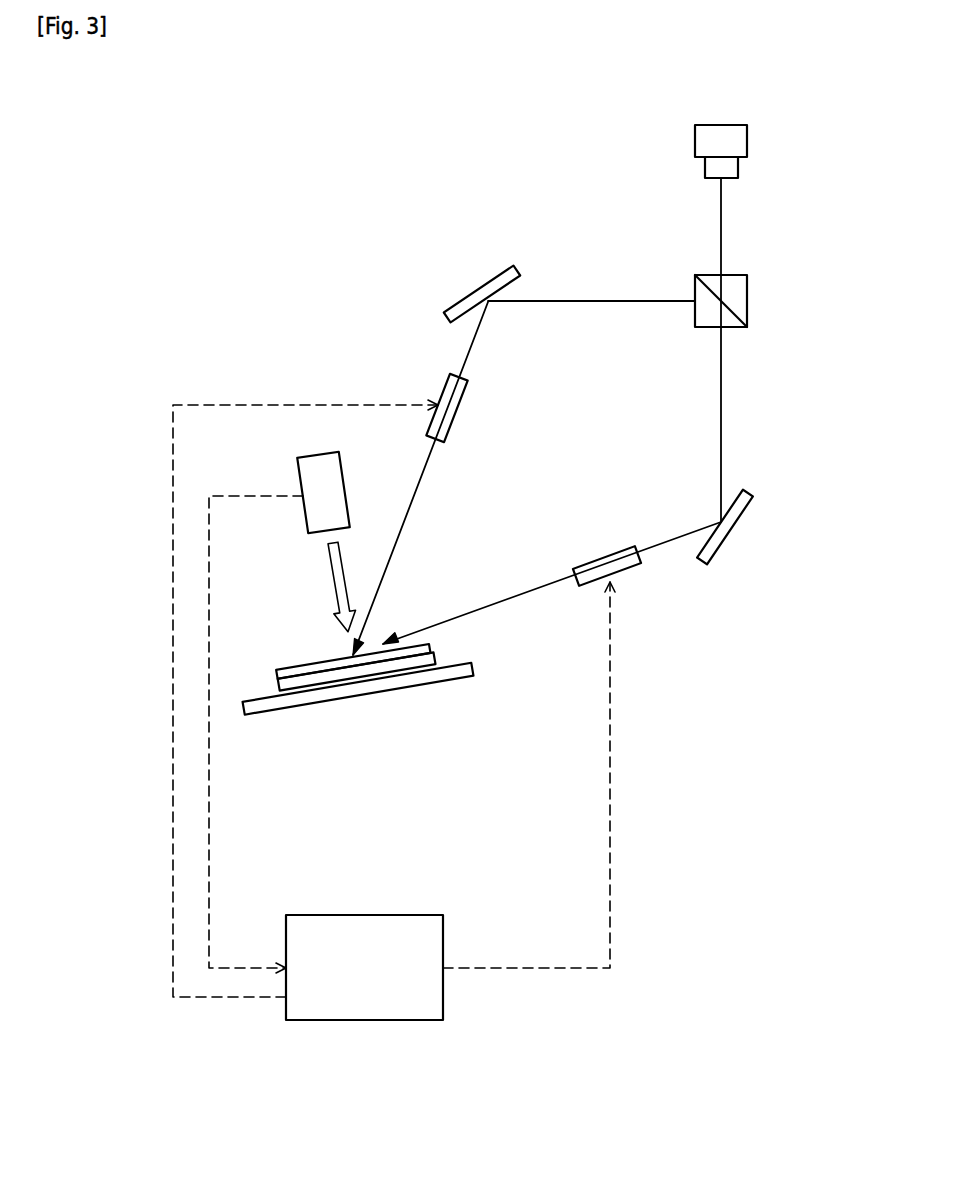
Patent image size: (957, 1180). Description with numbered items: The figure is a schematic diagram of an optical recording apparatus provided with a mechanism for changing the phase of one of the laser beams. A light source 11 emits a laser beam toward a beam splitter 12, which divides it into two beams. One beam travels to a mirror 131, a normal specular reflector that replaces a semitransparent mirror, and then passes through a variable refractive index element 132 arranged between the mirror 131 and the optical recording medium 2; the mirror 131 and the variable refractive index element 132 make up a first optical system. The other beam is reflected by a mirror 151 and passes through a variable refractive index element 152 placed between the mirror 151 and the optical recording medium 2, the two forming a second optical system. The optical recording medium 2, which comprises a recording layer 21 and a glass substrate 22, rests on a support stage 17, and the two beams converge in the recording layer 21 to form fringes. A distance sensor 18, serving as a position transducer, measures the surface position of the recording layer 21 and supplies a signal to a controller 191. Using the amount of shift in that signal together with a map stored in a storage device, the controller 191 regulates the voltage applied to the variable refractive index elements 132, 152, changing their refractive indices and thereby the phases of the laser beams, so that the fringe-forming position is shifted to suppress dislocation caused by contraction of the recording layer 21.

The light source 11 is at (748, 141).
The beam splitter 12 is at (748, 301).
The mirror 151 is at (500, 277).
The variable refractive index element 152 is at (444, 381).
The mirror 131 is at (738, 520).
The variable refractive index element 132 is at (628, 574).
The distance sensor 18 is at (347, 490).
The support stage 17 is at (473, 668).
The optical recording medium 2 is at (412, 648).
The recording layer 21 is at (430, 648).
The glass substrate 22 is at (434, 662).
The controller 191 is at (363, 1020).